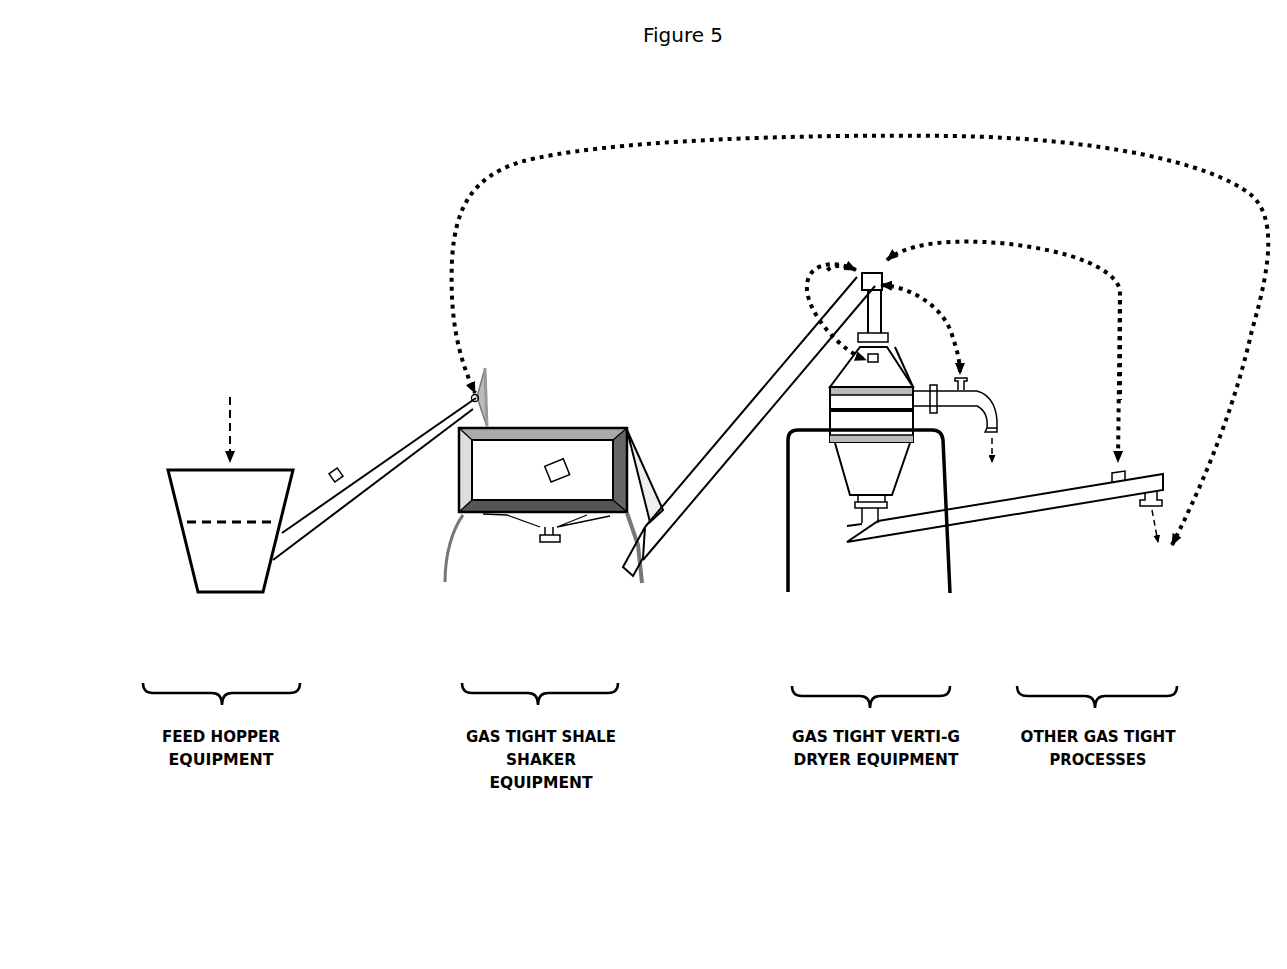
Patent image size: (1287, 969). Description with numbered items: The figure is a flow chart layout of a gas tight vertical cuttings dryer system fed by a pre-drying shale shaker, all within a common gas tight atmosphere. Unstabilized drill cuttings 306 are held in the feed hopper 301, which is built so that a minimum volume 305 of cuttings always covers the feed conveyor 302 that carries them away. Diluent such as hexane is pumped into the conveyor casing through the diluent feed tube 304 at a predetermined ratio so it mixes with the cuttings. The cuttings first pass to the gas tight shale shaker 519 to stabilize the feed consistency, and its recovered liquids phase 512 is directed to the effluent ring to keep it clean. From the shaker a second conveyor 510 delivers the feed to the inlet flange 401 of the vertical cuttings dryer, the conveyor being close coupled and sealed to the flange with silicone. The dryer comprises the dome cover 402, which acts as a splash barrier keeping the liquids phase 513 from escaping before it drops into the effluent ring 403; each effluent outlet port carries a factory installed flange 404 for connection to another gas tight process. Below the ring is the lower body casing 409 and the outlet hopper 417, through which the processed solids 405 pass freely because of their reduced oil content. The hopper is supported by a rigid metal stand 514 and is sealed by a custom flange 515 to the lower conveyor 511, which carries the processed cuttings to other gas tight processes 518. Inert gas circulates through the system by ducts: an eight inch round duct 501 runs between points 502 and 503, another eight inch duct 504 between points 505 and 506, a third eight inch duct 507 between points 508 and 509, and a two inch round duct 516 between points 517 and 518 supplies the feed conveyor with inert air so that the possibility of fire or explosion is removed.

The feed hopper 301 is at (170, 478).
The feed conveyor 302 is at (338, 513).
The diluent feed tube 304 is at (331, 476).
The minimum volume 305 is at (180, 523).
The unstabilized drill cuttings 306 is at (230, 417).
The inlet flange 401 is at (894, 333).
The dome cover 402 is at (920, 388).
The effluent ring 403 is at (828, 398).
The outlet port flange 404 is at (961, 378).
The processed solids 405 is at (934, 388).
The lower body casing 409 is at (828, 422).
The outlet hopper 417 is at (840, 470).
The eight inch round duct 501 is at (808, 278).
The duct connection point 502 is at (853, 272).
The duct connection point 503 is at (873, 363).
The eight inch round duct 504 is at (947, 320).
The duct connection point 505 is at (870, 280).
The duct connection point 506 is at (968, 382).
The eight inch round duct 507 is at (1118, 284).
The duct connection point 508 is at (873, 270).
The duct connection point 509 is at (1118, 473).
The second conveyor 510 is at (687, 513).
The lower conveyor 511 is at (1027, 513).
The recovered liquids phase 512 is at (548, 545).
The liquids phase 513 is at (990, 460).
The rigid metal stand 514 is at (947, 568).
The custom flange 515 is at (853, 508).
The two inch round duct 516 is at (1250, 327).
The duct connection point 517 is at (473, 398).
The other gas tight processes 518 is at (1157, 530).
The gas tight shale shaker 519 is at (547, 427).